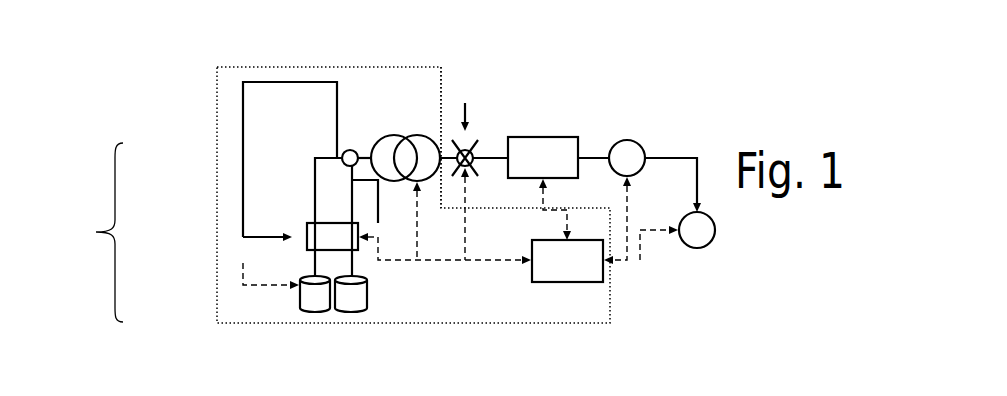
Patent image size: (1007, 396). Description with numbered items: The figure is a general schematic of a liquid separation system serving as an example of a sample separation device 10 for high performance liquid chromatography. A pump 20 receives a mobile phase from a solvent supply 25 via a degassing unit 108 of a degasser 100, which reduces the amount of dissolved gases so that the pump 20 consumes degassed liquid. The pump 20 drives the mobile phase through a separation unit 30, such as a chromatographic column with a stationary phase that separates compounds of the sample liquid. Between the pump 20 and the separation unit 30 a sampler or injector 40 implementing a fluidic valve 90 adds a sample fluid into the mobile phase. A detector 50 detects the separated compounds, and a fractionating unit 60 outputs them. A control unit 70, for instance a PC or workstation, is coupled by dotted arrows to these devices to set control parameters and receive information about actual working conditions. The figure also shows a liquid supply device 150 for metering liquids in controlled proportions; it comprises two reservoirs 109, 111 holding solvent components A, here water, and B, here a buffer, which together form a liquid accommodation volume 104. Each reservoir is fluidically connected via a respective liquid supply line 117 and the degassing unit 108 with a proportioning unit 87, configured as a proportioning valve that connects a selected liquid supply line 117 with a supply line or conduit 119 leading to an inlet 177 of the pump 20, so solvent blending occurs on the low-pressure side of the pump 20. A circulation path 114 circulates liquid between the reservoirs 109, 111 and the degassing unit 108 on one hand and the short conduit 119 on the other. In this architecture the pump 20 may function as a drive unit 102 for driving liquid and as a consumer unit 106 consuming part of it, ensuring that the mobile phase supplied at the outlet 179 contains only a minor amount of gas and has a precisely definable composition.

The sample separation device 10 is at (682, 102).
The pump 20 is at (395, 95).
The solvent supply 25 is at (96, 233).
The separation unit 30 is at (546, 137).
The sampler or injector 40 is at (475, 138).
The detector 50 is at (628, 140).
The fractionating unit 60 is at (716, 230).
The control unit 70 is at (560, 283).
The proportioning unit 87 is at (353, 148).
The fluidic valve 90 is at (472, 172).
The degasser 100 is at (302, 165).
The drive unit 102 is at (393, 95).
The consumer unit 106 is at (403, 134).
The liquid accommodation volume 104 is at (296, 299).
The degassing unit 108 is at (342, 238).
The reservoir 109 is at (302, 313).
The reservoir 111 is at (342, 313).
The circulation path 114 is at (247, 170).
The liquid supply line 117 is at (372, 230).
The supply line or conduit 119 is at (355, 220).
The liquid supply device 150 is at (218, 66).
The inlet 177 is at (360, 165).
The outlet 179 is at (441, 150).